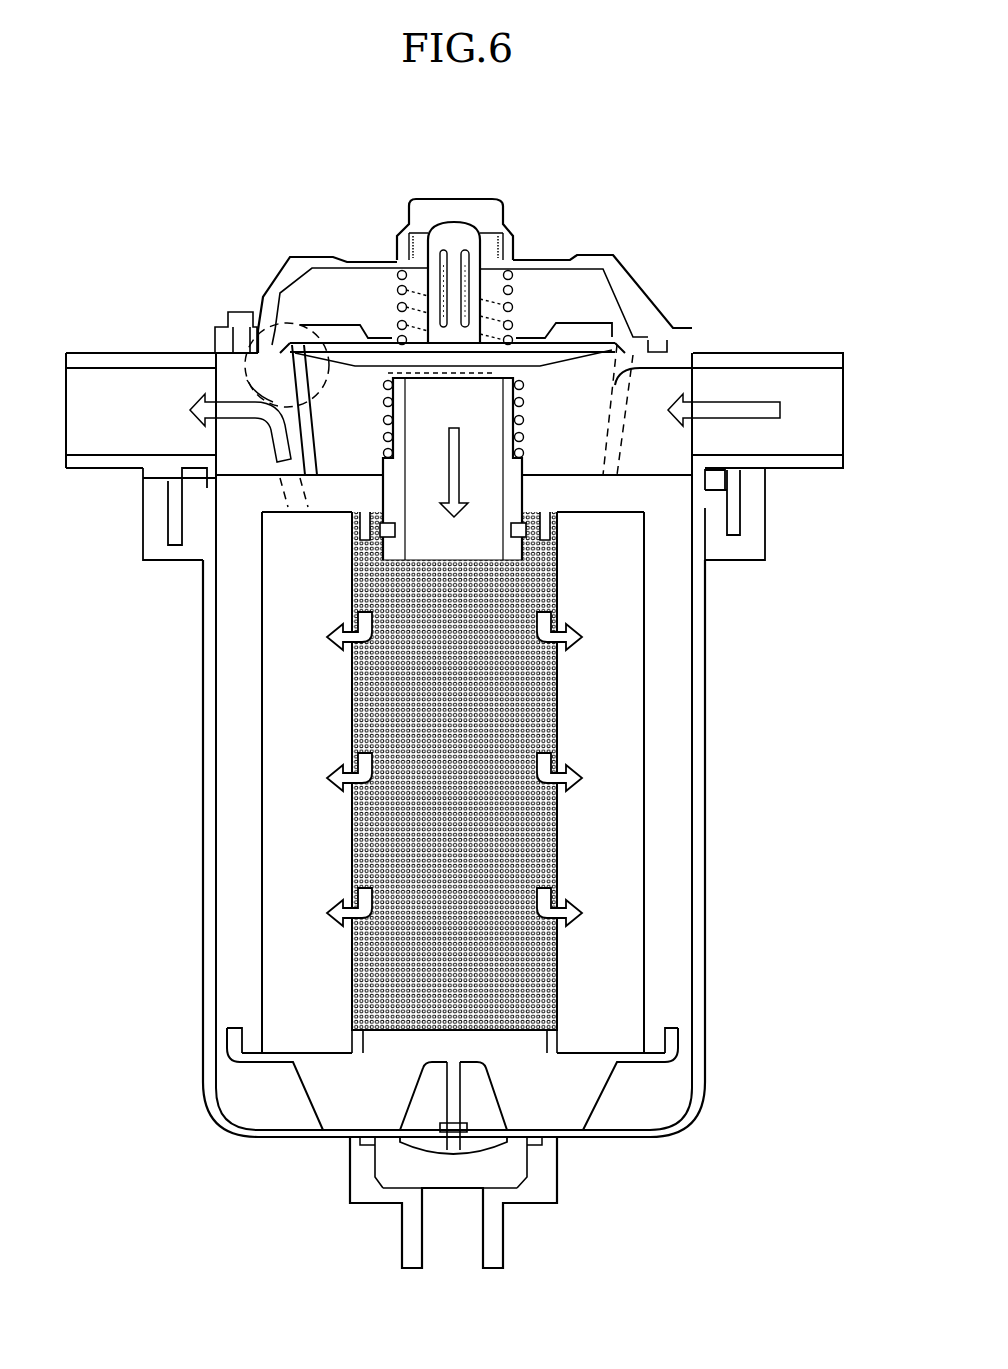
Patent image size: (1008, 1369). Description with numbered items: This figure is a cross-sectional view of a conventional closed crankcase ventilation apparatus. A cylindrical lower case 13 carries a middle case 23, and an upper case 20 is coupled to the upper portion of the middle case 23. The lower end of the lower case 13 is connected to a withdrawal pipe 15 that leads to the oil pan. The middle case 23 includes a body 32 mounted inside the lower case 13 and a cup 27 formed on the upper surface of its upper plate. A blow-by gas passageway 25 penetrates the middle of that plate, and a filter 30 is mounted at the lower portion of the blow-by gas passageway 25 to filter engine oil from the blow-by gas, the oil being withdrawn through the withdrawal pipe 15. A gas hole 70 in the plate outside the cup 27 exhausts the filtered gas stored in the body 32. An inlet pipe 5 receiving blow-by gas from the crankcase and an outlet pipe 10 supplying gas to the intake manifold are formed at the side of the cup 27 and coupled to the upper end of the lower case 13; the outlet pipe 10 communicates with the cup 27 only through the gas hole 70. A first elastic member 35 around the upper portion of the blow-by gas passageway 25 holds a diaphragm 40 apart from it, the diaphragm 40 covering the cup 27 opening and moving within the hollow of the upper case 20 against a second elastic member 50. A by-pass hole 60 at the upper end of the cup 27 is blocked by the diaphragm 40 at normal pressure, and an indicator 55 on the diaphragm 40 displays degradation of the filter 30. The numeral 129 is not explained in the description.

The inlet pipe 5 is at (818, 442).
The outlet pipe 10 is at (74, 424).
The lower case 13 is at (705, 849).
The withdrawal pipe 15 is at (445, 1245).
The upper case 20 is at (618, 268).
The middle case 23 is at (216, 798).
The blow-by gas passageway 25 is at (487, 540).
The cup 27 is at (252, 506).
The filter 30 is at (543, 707).
The body 32 is at (230, 905).
The first elastic member 35 is at (520, 418).
The diaphragm 40 is at (574, 343).
The second elastic member 50 is at (516, 292).
The indicator 55 is at (463, 224).
The by-pass hole 60 is at (290, 335).
The gas hole 70 is at (263, 512).
The flow passage 129 is at (280, 500).